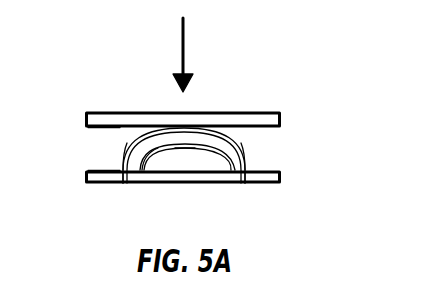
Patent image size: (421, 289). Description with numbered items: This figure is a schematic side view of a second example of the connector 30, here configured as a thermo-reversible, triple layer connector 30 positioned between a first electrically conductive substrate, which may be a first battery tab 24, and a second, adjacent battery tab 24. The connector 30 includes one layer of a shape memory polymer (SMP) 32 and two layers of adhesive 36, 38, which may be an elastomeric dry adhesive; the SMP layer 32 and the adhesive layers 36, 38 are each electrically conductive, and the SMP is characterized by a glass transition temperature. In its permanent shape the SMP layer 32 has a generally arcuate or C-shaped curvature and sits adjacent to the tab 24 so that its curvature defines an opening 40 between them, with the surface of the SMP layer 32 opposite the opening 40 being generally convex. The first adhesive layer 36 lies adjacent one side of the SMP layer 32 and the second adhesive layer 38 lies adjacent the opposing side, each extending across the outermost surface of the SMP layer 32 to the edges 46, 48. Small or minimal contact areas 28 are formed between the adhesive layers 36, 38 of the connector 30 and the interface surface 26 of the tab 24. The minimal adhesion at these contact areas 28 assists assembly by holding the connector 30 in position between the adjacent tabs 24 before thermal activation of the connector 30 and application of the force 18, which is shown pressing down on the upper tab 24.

The force 18 is at (183, 35).
The battery tab 24 is at (108, 113).
The interface surface 26 is at (99, 128).
The contact area 28 is at (194, 128).
The connector 30 is at (278, 152).
The shape memory polymer layer 32 is at (205, 168).
The first adhesive layer 36 is at (147, 128).
The second adhesive layer 38 is at (167, 158).
The opening 40 is at (187, 158).
The edge 46 is at (122, 183).
The edge 48 is at (247, 183).